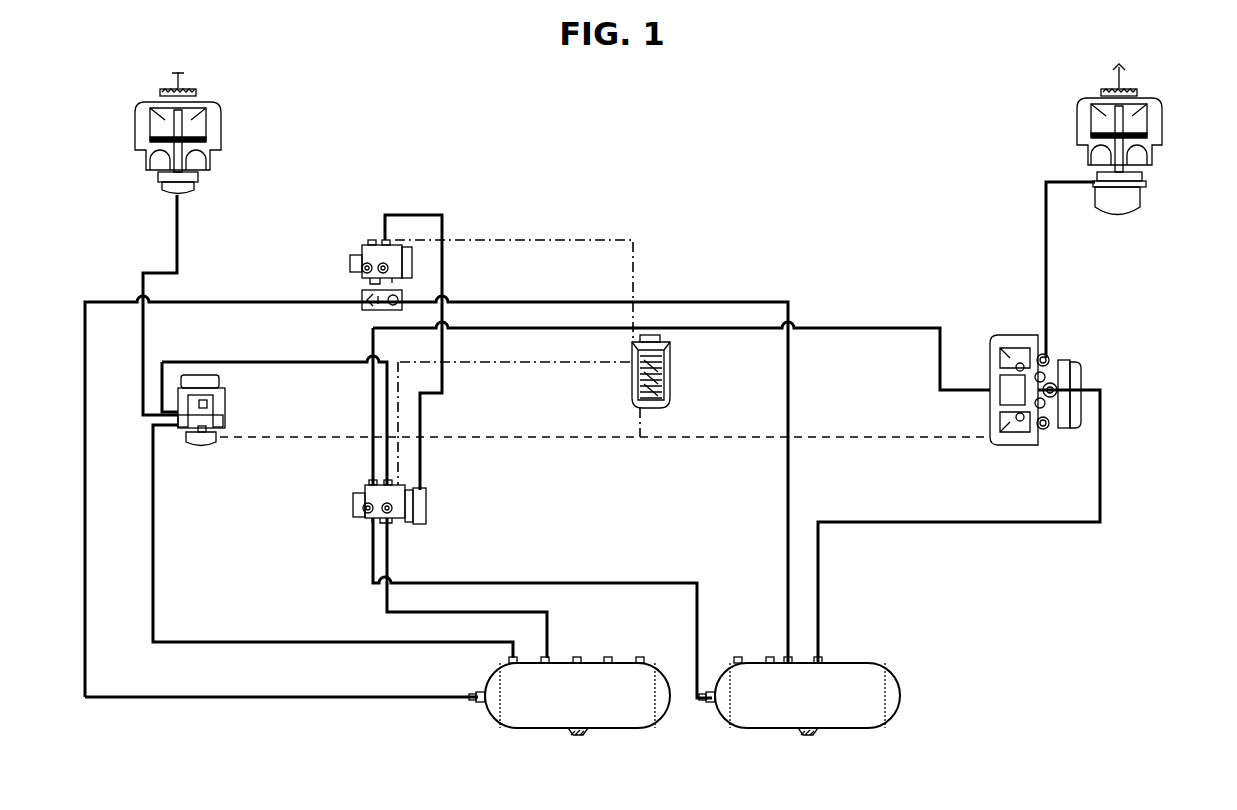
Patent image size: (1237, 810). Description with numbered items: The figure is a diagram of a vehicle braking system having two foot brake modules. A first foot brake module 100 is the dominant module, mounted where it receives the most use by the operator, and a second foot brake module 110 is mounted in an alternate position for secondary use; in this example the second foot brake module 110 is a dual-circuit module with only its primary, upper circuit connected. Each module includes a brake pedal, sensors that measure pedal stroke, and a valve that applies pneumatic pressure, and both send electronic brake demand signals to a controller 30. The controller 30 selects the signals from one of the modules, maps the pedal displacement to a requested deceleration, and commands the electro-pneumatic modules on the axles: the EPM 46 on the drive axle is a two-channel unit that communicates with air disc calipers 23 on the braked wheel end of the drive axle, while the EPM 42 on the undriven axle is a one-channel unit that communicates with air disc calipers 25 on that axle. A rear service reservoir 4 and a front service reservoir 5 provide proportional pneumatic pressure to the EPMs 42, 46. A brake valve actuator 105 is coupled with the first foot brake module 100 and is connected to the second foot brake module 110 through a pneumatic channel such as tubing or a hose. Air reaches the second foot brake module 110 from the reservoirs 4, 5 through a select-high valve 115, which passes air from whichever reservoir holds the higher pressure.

The air disc calipers 25 is at (134, 125).
The air disc calipers 23 is at (1165, 122).
The second foot brake module 110 is at (358, 246).
The select-high valve 115 is at (372, 313).
The electro-pneumatic module 42 is at (230, 401).
The controller 30 is at (672, 373).
The electro-pneumatic module 46 is at (1020, 335).
The first foot brake module 100 is at (352, 505).
The brake valve actuator 105 is at (428, 506).
The front service reservoir 5 is at (642, 728).
The rear service reservoir 4 is at (868, 728).